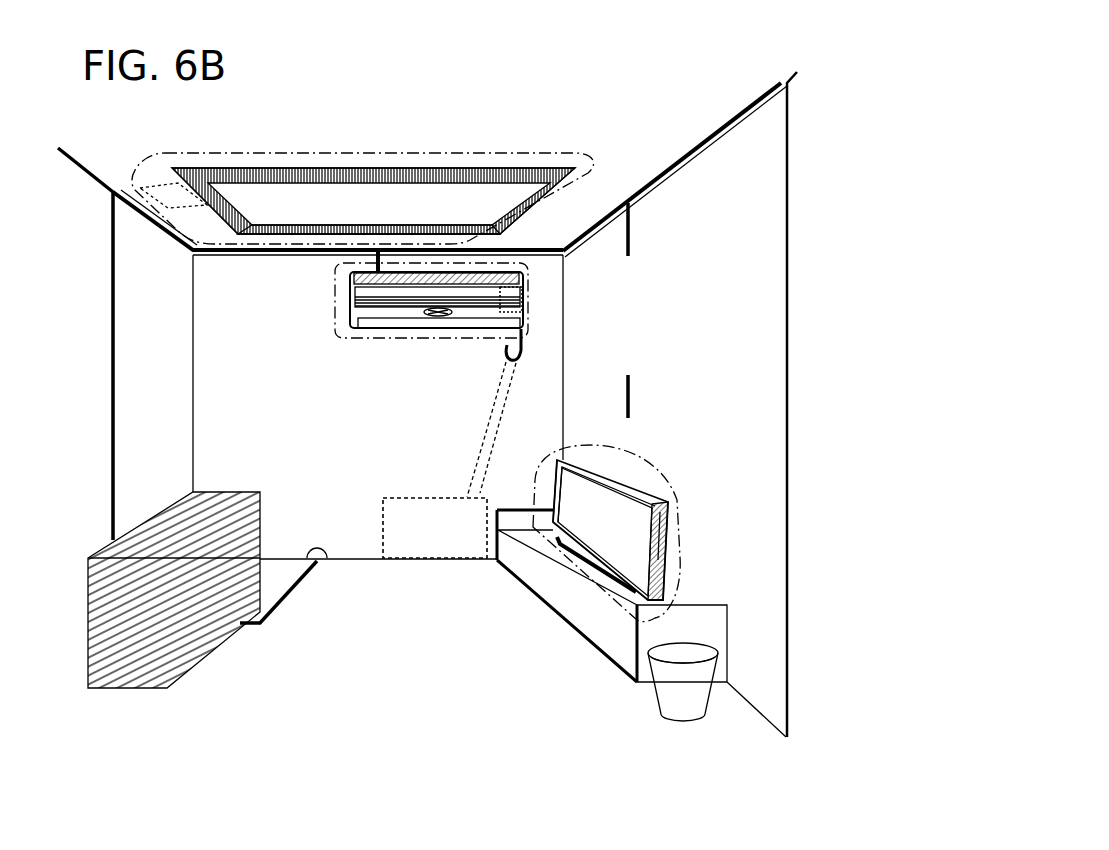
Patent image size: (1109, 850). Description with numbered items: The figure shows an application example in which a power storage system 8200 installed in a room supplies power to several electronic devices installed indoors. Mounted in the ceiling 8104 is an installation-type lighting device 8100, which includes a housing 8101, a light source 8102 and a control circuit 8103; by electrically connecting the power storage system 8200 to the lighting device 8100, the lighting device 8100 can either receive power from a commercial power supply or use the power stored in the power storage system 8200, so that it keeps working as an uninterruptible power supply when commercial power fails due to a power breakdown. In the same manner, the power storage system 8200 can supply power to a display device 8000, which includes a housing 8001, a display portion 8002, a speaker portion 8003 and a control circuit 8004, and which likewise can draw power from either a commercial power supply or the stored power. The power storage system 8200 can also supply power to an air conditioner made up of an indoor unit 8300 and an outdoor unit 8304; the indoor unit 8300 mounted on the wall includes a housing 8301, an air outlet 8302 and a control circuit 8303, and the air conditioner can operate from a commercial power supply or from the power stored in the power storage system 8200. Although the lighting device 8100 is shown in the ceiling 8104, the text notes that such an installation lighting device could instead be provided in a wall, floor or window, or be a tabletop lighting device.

The display device 8000 is at (657, 475).
The housing 8001 is at (623, 480).
The display portion 8002 is at (577, 490).
The speaker portion 8003 is at (558, 458).
The control circuit 8004 is at (662, 512).
The lighting device 8100 is at (590, 172).
The housing 8101 is at (512, 212).
The light source 8102 is at (478, 228).
The control circuit 8103 is at (160, 185).
The ceiling 8104 is at (589, 130).
The power storage system 8200 is at (158, 588).
The indoor unit 8300 is at (530, 281).
The housing 8301 is at (524, 298).
The air outlet 8302 is at (516, 327).
The control circuit 8303 is at (525, 311).
The outdoor unit 8304 is at (485, 533).